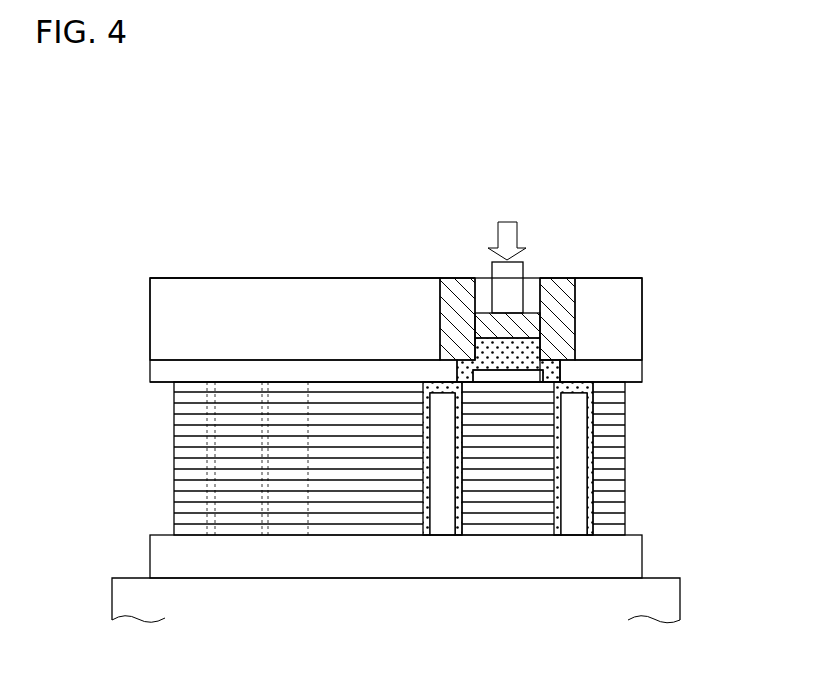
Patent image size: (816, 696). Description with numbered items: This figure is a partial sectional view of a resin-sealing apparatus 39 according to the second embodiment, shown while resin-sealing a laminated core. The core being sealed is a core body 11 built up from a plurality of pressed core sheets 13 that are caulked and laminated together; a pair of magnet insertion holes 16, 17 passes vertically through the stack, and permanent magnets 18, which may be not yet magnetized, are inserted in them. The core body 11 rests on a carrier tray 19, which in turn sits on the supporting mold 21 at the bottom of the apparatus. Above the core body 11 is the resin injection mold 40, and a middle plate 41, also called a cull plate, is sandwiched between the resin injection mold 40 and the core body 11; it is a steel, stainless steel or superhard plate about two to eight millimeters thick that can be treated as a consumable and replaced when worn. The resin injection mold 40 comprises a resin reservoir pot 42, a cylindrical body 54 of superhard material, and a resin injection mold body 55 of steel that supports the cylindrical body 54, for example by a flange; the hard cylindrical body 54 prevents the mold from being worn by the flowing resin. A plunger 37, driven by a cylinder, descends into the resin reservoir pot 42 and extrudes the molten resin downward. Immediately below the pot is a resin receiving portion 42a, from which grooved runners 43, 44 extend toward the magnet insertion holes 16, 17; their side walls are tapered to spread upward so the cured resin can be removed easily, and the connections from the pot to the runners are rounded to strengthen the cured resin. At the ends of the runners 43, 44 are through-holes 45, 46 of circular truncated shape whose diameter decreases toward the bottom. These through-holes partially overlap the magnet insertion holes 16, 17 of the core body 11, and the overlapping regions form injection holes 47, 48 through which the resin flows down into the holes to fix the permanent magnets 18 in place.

The resin injection mold 40 is at (146, 317).
The resin-sealing apparatus 39 is at (221, 276).
The resin injection mold body 55 is at (177, 305).
The middle plate 41 is at (631, 373).
The resin reservoir pot 42 is at (458, 290).
The runner 43 is at (472, 333).
The cylindrical body 54 is at (558, 298).
The runner 44 is at (575, 320).
The plunger 37 is at (521, 325).
The through-hole 45 is at (466, 370).
The resin receiving portion 42a is at (510, 377).
The through-hole 46 is at (563, 370).
The injection hole 47 is at (435, 382).
The injection hole 48 is at (580, 380).
The magnet insertion hole 16 is at (458, 537).
The magnet insertion hole 17 is at (592, 537).
The permanent magnet 18 is at (443, 508).
The core body 11 is at (629, 421).
The core sheet 13 is at (621, 480).
The carrier tray 19 is at (646, 552).
The supporting mold 21 is at (667, 598).